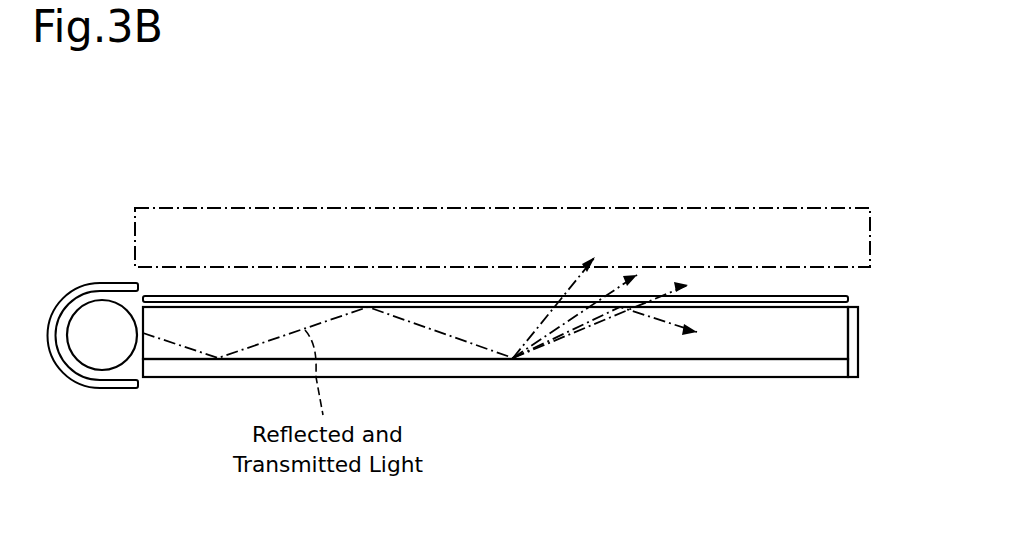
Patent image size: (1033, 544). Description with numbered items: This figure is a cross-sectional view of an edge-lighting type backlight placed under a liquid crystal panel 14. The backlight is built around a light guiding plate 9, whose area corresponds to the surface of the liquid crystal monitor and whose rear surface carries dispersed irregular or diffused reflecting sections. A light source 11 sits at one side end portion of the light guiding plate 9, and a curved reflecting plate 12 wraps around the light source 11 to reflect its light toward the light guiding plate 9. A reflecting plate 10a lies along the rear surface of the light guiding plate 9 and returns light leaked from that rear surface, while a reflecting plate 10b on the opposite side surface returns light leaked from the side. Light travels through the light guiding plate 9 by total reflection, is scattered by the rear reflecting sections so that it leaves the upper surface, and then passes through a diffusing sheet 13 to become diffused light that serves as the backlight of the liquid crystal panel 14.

The light guiding plate 9 is at (198, 320).
The reflecting plate 10a is at (557, 378).
The reflecting plate 10b is at (858, 362).
The light source 11 is at (93, 353).
The reflecting plate 12 is at (118, 387).
The diffusing sheet 13 is at (368, 305).
The liquid crystal panel 14 is at (533, 210).